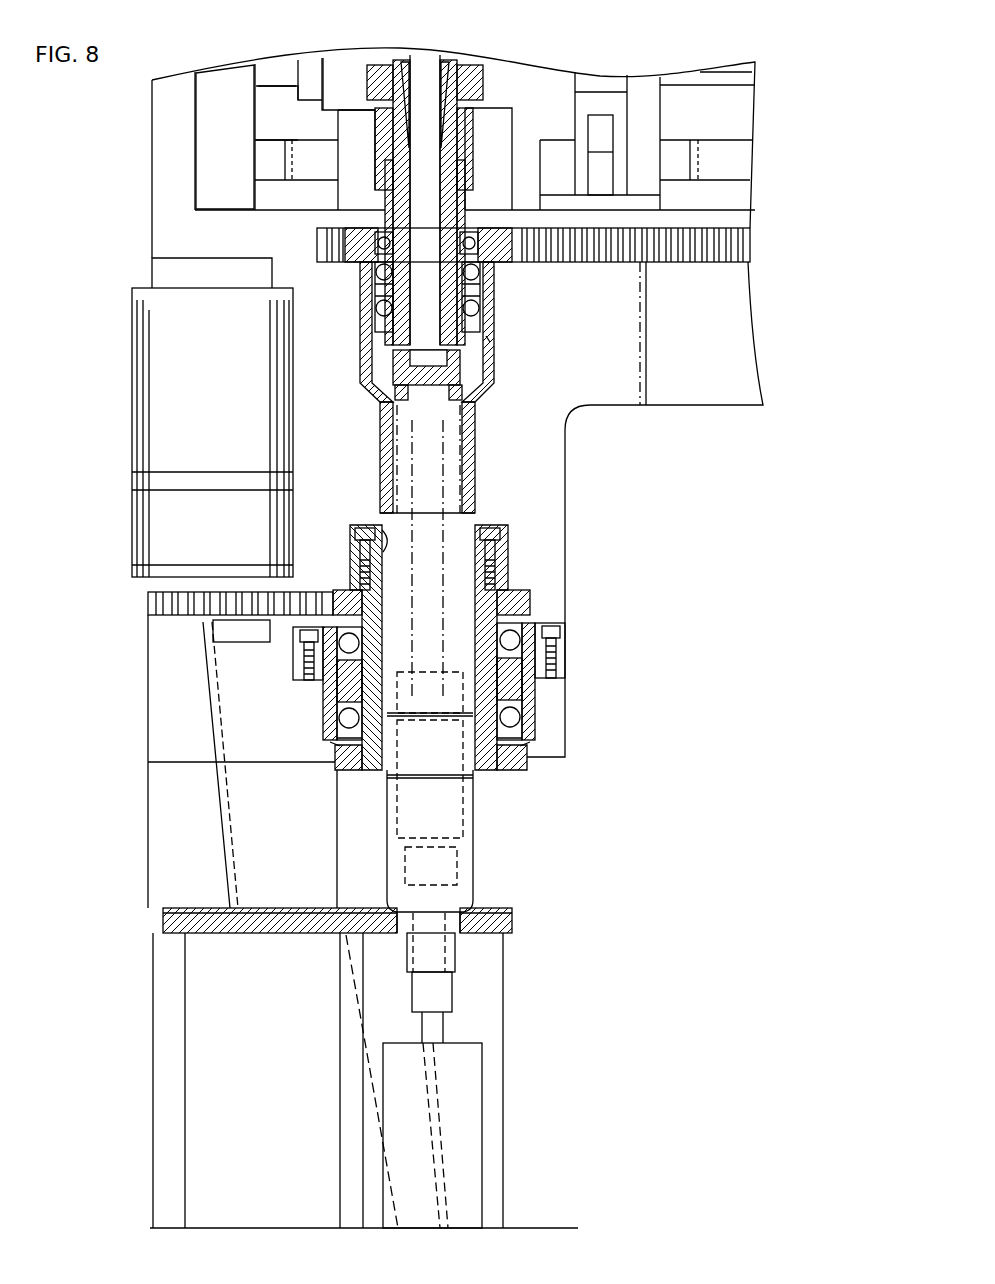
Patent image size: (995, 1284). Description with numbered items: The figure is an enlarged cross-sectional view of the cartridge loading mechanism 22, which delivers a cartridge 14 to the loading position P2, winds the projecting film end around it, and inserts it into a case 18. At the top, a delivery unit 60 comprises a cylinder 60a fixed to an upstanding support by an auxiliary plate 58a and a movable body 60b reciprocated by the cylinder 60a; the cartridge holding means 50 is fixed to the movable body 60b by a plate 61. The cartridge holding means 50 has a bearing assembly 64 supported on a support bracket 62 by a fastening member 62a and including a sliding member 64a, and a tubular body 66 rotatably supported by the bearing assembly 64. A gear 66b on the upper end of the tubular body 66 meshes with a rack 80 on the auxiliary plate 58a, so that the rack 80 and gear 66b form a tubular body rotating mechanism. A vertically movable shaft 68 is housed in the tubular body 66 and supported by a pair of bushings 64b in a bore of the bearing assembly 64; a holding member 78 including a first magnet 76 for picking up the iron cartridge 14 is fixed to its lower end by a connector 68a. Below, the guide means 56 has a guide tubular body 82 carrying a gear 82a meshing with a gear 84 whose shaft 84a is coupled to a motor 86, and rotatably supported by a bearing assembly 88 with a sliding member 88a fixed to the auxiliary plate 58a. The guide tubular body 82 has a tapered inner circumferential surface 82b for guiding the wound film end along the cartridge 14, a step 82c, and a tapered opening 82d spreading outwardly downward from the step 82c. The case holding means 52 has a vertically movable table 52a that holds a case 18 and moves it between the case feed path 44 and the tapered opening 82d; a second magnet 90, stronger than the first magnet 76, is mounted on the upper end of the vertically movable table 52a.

The cartridge 14 is at (400, 452).
The case 18 is at (476, 776).
The cartridge loading mechanism 22 is at (588, 74).
The case feed path 44 is at (246, 932).
The cartridge holding means 50 is at (398, 58).
The case holding means 52 is at (486, 1092).
The vertically movable table 52a is at (440, 998).
The guide means 56 is at (566, 624).
The auxiliary plate 58a is at (696, 405).
The delivery unit 60 is at (678, 98).
The cylinder 60a is at (236, 86).
The movable body 60b is at (304, 72).
The plate 61 is at (346, 60).
The support bracket 62 is at (470, 128).
The fastening member 62a is at (482, 86).
The bearing assembly 64 is at (468, 165).
The sliding member 64a is at (376, 302).
The bushings 64b is at (448, 58).
The tubular body 66 is at (497, 366).
The gear 66b is at (514, 246).
The vertically movable shaft 68 is at (428, 56).
The connector 68a is at (458, 374).
The magnet 76 is at (470, 424).
The holding member 78 is at (462, 394).
The rack 80 is at (688, 262).
The guide tubular body 82 is at (506, 526).
The gear 82a is at (336, 590).
The tapered inner circumferential surface 82b is at (384, 530).
The step 82c is at (460, 712).
The tapered opening 82d is at (386, 774).
The gear 84 is at (178, 620).
The shaft 84a is at (244, 636).
The motor 86 is at (146, 348).
The bearing assembly 88 is at (324, 692).
The sliding member 88a is at (325, 736).
The magnet 90 is at (455, 962).
The loading position P2 is at (470, 890).